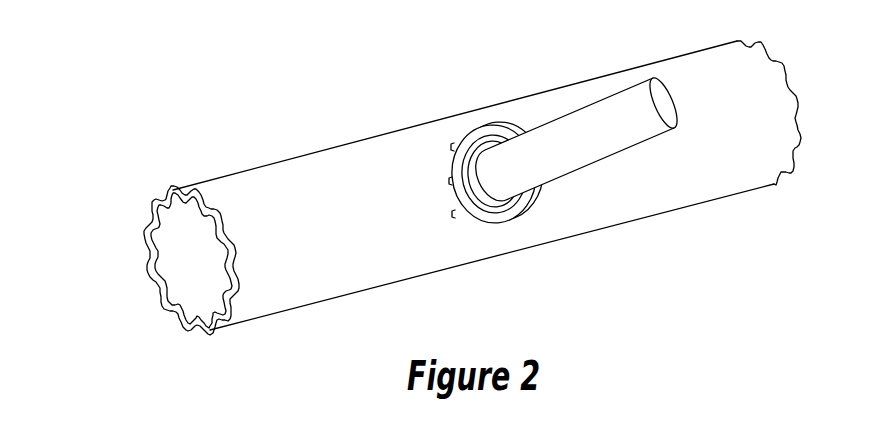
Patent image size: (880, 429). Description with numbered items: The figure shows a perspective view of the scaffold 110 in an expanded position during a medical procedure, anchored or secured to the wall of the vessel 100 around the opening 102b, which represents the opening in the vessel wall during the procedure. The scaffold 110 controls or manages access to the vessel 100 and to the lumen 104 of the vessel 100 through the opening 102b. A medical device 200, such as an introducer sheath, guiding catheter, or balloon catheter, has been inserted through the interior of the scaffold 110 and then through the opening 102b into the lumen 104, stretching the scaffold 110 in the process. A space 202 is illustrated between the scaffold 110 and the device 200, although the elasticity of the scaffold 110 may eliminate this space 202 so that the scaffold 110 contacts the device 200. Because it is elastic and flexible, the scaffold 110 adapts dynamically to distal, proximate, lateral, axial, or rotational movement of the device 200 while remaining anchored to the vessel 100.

The vessel 100 is at (297, 157).
The lumen of the vessel 104 is at (217, 255).
The scaffold 110 is at (465, 210).
The space 202 is at (461, 143).
The opening 102b is at (497, 188).
The medical device 200 is at (595, 103).